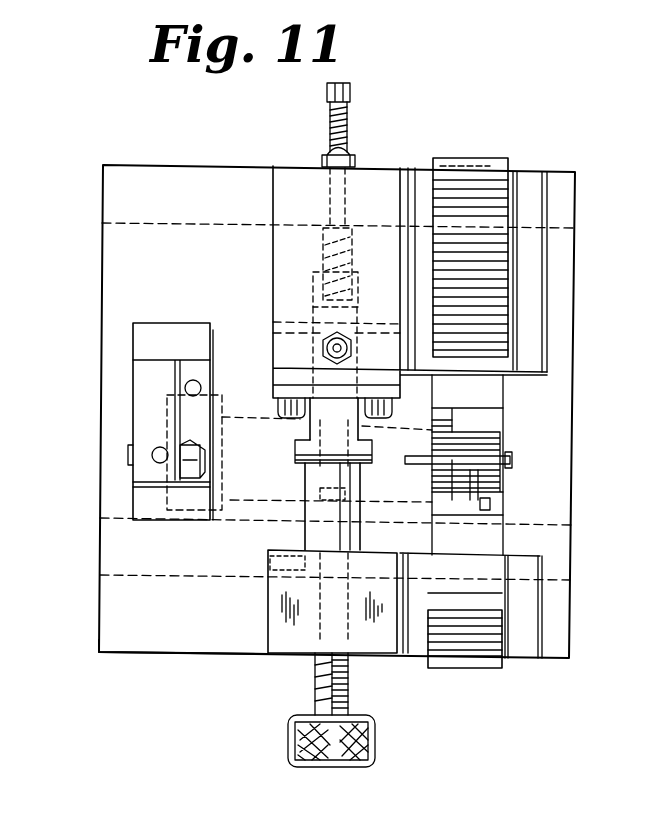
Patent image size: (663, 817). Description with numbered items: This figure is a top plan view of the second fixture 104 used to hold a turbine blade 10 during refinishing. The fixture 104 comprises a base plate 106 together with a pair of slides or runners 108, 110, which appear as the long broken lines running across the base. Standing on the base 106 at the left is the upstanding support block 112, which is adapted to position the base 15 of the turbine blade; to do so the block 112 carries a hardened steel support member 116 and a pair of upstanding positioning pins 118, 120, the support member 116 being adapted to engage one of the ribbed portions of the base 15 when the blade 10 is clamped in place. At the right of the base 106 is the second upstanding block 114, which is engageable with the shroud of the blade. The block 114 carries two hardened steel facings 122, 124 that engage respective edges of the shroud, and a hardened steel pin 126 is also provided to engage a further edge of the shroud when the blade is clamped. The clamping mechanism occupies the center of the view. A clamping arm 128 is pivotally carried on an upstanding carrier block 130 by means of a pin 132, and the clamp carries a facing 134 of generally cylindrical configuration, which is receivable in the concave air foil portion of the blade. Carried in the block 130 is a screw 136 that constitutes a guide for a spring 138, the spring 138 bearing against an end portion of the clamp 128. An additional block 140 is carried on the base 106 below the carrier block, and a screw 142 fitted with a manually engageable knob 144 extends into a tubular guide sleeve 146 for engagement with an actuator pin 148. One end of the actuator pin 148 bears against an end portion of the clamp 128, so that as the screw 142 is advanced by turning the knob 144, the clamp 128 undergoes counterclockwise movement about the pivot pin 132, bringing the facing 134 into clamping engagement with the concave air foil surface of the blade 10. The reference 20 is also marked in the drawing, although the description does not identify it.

The blade 10 is at (262, 503).
The base 15 is at (168, 395).
The stop element 20 is at (490, 505).
The second fixture 104 is at (142, 660).
The base plate 106 is at (108, 279).
The slide or runner 108 is at (166, 578).
The slide or runner 110 is at (165, 226).
The upstanding support block 112 is at (133, 395).
The second upstanding block 114 is at (495, 422).
The hardened steel support member 116 is at (181, 462).
The upstanding positioning pin 118 is at (152, 460).
The upstanding positioning pin 120 is at (202, 385).
The hardened steel facing 122 is at (505, 485).
The hardened steel facing 124 is at (503, 445).
The hardened steel pin 126 is at (512, 458).
The clamping arm 128 is at (273, 391).
The upstanding carrier block 130 is at (273, 300).
The pin 132 is at (372, 332).
The facing 134 is at (330, 467).
The screw 136 is at (347, 125).
The spring 138 is at (323, 262).
The additional block 140 is at (392, 658).
The screw 142 is at (300, 632).
The manually engageable knob 144 is at (375, 742).
The tubular guide sleeve 146 is at (358, 538).
The actuator pin 148 is at (355, 478).